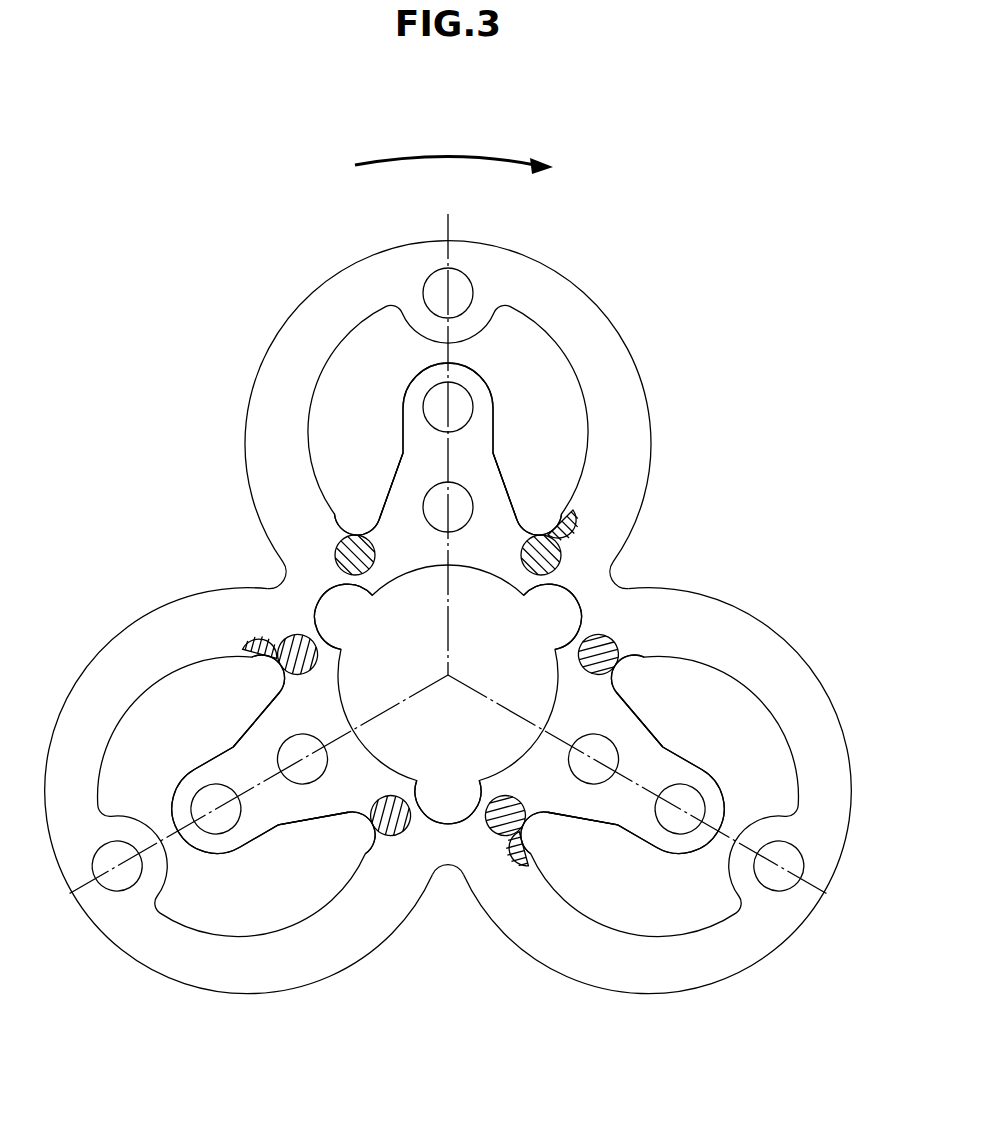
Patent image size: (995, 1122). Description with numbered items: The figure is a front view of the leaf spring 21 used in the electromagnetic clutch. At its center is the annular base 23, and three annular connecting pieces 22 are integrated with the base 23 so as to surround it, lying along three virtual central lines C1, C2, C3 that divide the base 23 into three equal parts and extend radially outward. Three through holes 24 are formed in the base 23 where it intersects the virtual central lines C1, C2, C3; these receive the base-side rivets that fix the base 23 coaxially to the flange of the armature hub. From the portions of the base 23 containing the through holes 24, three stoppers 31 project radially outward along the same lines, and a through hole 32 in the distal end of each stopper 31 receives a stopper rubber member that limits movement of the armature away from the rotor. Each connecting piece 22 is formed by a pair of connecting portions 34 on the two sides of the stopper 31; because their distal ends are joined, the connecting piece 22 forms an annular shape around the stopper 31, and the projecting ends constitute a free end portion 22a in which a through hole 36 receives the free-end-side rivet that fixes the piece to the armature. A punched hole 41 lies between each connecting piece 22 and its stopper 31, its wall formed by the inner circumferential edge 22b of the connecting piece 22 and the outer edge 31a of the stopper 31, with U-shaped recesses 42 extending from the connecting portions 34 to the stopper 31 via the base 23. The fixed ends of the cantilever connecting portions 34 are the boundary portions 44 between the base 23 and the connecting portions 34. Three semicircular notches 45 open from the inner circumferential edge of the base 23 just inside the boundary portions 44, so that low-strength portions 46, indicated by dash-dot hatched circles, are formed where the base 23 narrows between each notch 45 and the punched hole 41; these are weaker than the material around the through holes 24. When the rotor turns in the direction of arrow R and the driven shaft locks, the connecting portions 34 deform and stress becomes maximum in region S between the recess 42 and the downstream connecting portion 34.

The leaf spring 21 is at (278, 318).
The connecting piece 22 is at (320, 285).
The free end portion 22a is at (433, 257).
The inner circumferential edge 22b is at (558, 347).
The annular base 23 is at (408, 576).
The through hole 24 is at (428, 494).
The stopper 31 is at (493, 416).
The outer edge of stopper 31a is at (499, 470).
The through hole 32 is at (461, 413).
The connecting portion 34 is at (272, 373).
The through hole 36 is at (428, 288).
The punched hole 41 is at (335, 407).
The U-shaped recess 42 is at (360, 530).
The boundary portion 44 is at (646, 558).
The notch 45 is at (330, 606).
The low-strength portion 46 is at (338, 546).
The region S is at (574, 516).
The arrow R is at (452, 155).
The virtual central line C1 is at (450, 224).
The virtual central line C2 is at (815, 905).
The virtual central line C3 is at (66, 900).